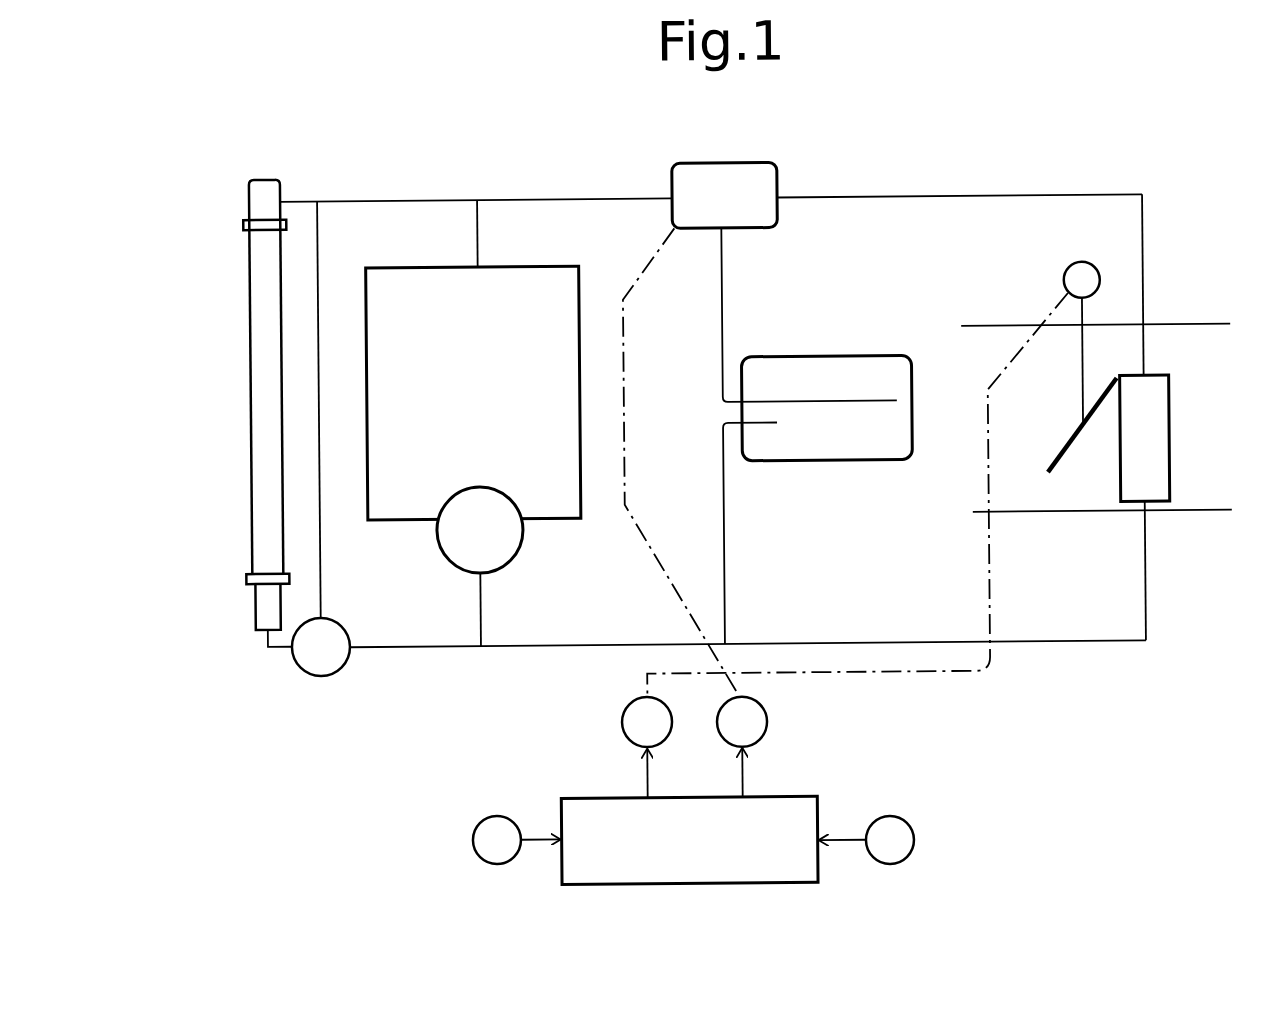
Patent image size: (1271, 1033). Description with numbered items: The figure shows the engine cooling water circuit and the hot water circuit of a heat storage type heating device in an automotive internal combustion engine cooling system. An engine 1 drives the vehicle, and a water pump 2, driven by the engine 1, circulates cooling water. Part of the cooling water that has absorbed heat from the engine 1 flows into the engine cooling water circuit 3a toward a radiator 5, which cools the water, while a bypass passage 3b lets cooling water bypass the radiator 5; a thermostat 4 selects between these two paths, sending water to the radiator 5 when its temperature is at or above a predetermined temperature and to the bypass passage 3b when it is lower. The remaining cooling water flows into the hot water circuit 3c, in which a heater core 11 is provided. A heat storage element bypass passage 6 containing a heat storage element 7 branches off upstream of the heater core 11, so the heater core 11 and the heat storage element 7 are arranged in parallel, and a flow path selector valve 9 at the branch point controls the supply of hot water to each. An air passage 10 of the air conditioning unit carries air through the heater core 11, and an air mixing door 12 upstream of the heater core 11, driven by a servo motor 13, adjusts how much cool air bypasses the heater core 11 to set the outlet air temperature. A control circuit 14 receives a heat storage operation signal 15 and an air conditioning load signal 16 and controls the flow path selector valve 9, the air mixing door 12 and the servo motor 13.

The engine 1 is at (417, 264).
The water pump 2 is at (517, 551).
The engine cooling water circuit 3a is at (459, 198).
The bypass passage 3b is at (318, 408).
The hot water circuit 3c is at (987, 198).
The thermostat 4 is at (341, 662).
The radiator 5 is at (250, 403).
The heat storage element bypass passage 6 is at (722, 368).
The heat storage element 7 is at (855, 358).
The flow path selector valve 9 is at (747, 163).
The air passage 10 is at (1186, 329).
The heater core 11 is at (1170, 432).
The air mixing door 12 is at (1065, 455).
The servo motor 13 is at (1068, 271).
The control circuit 14 is at (792, 799).
The heat storage operation signal 15 is at (474, 826).
The air conditioning load signal 16 is at (908, 830).